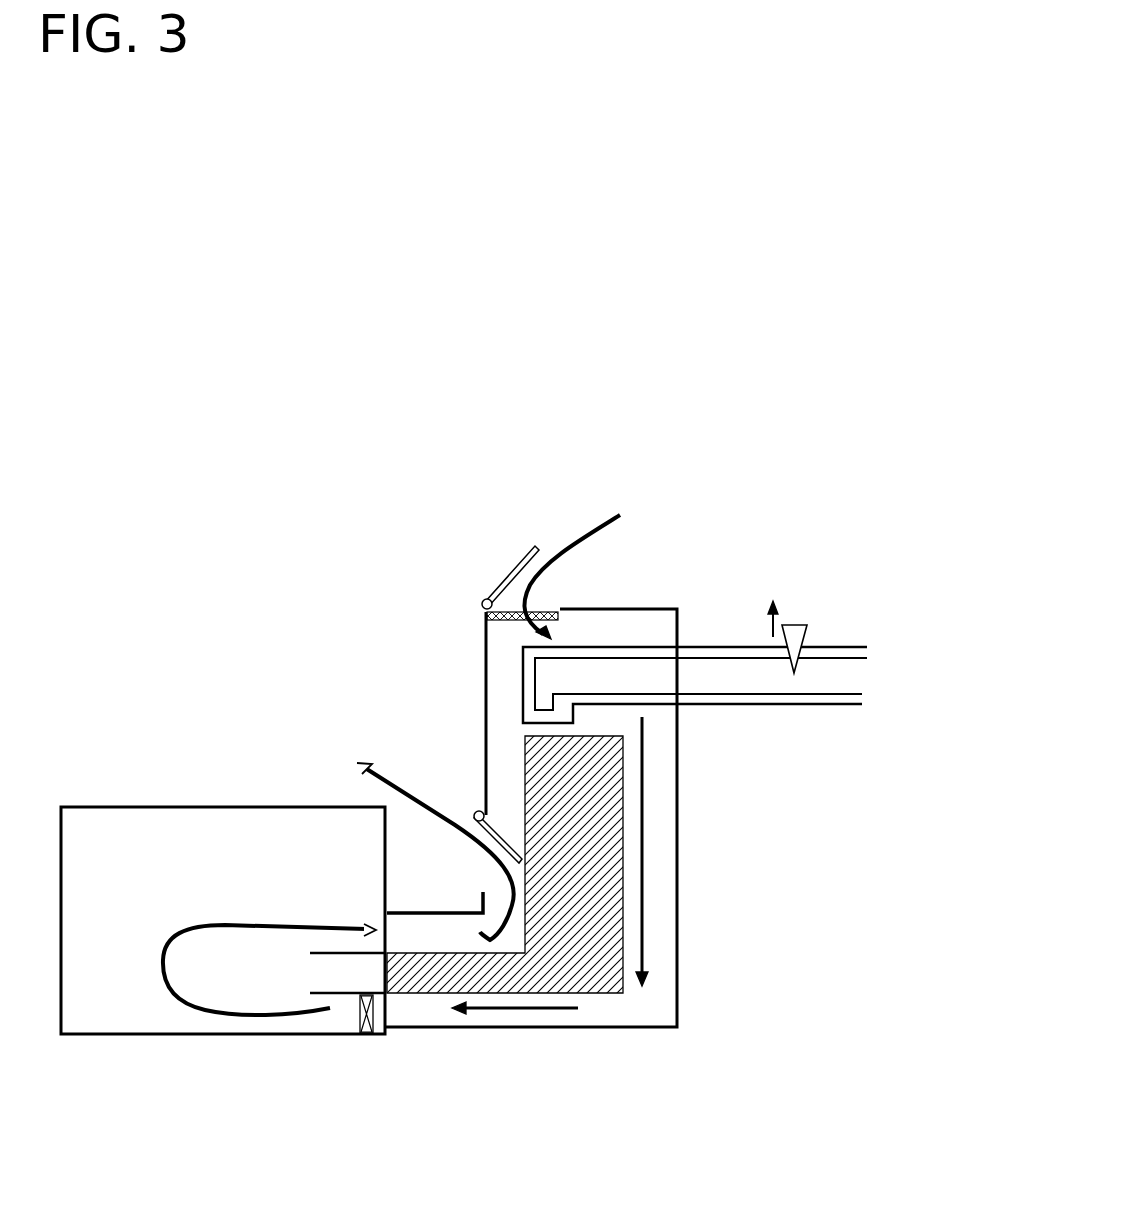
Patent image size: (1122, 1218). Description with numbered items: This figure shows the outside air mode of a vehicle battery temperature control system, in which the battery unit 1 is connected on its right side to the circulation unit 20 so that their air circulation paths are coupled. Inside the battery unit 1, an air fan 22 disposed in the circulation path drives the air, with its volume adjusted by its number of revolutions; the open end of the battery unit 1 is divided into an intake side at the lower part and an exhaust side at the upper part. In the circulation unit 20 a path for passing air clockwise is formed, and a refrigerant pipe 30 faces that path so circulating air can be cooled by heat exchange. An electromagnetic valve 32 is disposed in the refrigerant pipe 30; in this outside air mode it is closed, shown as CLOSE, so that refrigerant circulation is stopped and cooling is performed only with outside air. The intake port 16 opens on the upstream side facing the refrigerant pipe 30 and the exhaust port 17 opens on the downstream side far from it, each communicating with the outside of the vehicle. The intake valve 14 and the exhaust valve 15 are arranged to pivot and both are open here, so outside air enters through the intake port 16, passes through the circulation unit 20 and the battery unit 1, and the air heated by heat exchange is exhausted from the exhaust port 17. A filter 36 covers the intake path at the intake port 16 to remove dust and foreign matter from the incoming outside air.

The battery unit 1 is at (197, 807).
The intake valve 14 is at (516, 550).
The exhaust valve 15 is at (498, 825).
The intake port 16 is at (547, 596).
The exhaust port 17 is at (478, 876).
The circulation unit 20 is at (485, 680).
The air fan 22 is at (362, 1022).
The refrigerant pipe 30 is at (693, 645).
The electromagnetic valve 32 is at (808, 628).
The filter 36 is at (560, 617).